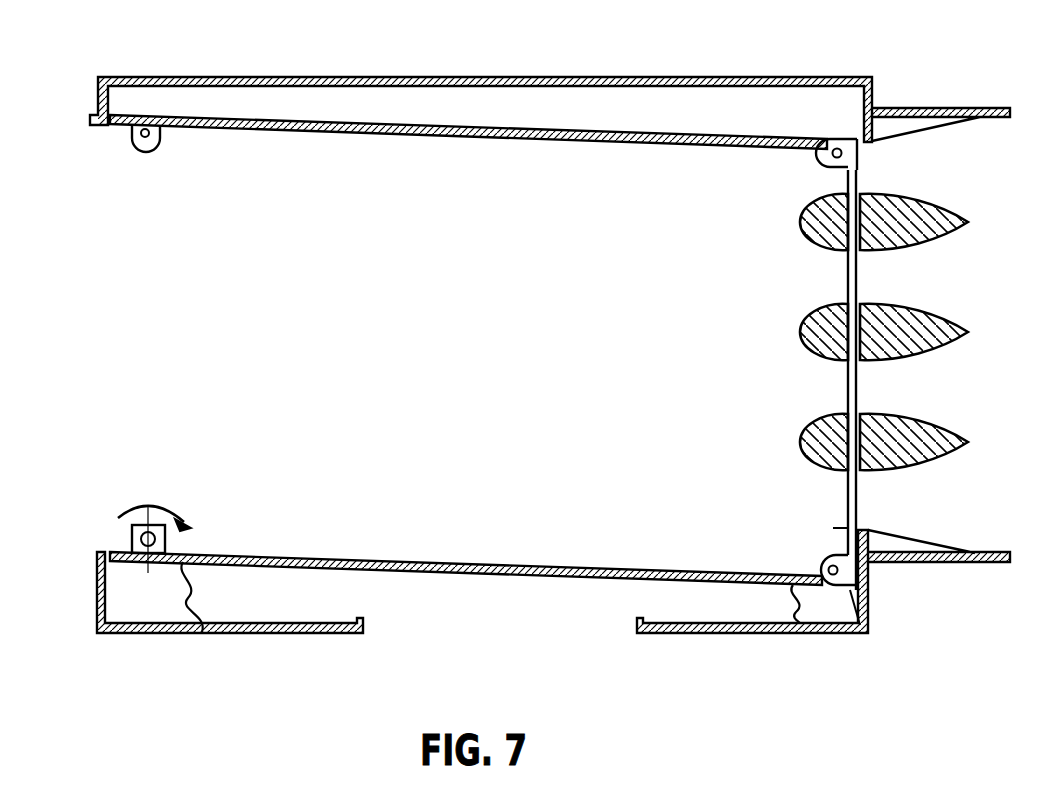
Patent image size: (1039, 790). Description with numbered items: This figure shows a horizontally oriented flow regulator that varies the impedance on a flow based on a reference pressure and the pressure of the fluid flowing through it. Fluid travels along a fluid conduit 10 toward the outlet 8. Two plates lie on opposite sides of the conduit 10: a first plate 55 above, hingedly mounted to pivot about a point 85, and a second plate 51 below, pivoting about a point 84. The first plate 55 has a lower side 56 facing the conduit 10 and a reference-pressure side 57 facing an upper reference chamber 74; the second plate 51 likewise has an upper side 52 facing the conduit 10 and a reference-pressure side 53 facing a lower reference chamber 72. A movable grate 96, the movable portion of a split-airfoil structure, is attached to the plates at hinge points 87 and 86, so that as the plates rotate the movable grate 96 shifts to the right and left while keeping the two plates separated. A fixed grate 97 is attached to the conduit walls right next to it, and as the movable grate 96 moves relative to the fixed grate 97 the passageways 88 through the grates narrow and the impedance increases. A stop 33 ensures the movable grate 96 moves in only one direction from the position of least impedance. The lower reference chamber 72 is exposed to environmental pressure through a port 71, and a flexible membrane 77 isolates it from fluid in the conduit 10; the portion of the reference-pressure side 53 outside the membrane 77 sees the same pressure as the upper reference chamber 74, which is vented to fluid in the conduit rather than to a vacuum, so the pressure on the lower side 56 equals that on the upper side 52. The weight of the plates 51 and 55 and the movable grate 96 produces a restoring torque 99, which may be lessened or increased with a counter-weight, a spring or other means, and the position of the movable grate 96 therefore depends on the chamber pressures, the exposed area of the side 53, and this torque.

The outlet 8 is at (988, 108).
The fluid conduit 10 is at (452, 314).
The stop 33 is at (868, 630).
The second plate 51 is at (365, 561).
The upper side of second plate 52 is at (573, 568).
The reference-pressure side of second plate 53 is at (548, 579).
The first plate 55 is at (540, 141).
The lower side of first plate 56 is at (358, 133).
The reference-pressure side of first plate 57 is at (440, 123).
The port 71 is at (398, 625).
The lower reference chamber 72 is at (703, 616).
The upper reference chamber 74 is at (778, 117).
The flexible membrane 77 is at (202, 633).
The pivot point of second plate 84 is at (132, 540).
The pivot point of first plate 85 is at (147, 137).
The hinge point 86 is at (868, 575).
The hinge point 87 is at (826, 154).
The passageways 88 is at (862, 177).
The movable grate 96 is at (846, 475).
The fixed grate 97 is at (858, 473).
The restoring torque 99 is at (176, 470).